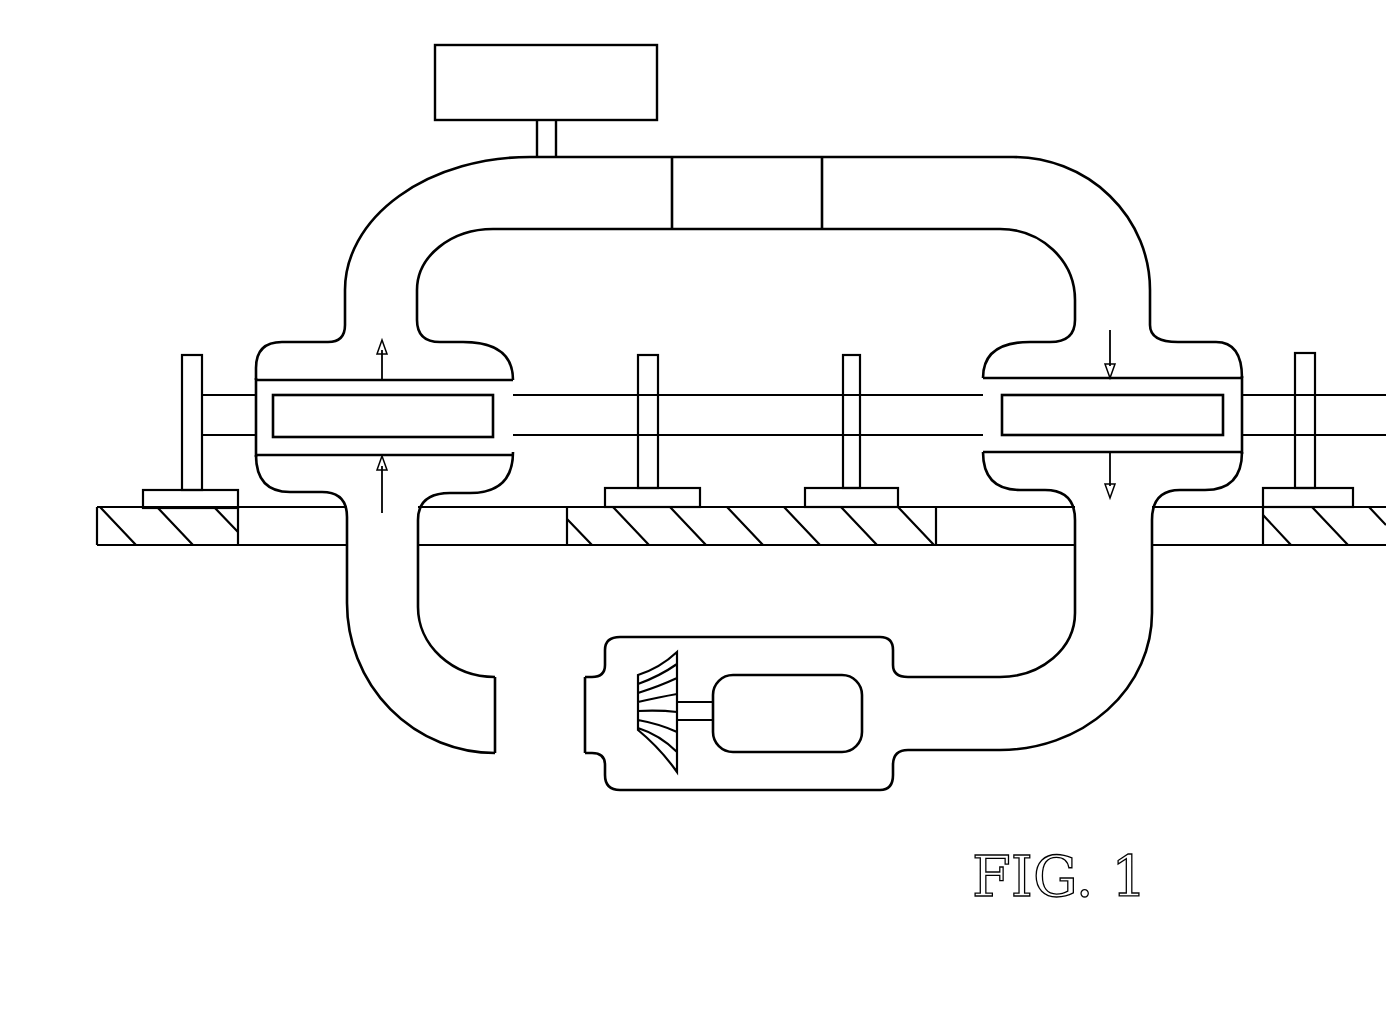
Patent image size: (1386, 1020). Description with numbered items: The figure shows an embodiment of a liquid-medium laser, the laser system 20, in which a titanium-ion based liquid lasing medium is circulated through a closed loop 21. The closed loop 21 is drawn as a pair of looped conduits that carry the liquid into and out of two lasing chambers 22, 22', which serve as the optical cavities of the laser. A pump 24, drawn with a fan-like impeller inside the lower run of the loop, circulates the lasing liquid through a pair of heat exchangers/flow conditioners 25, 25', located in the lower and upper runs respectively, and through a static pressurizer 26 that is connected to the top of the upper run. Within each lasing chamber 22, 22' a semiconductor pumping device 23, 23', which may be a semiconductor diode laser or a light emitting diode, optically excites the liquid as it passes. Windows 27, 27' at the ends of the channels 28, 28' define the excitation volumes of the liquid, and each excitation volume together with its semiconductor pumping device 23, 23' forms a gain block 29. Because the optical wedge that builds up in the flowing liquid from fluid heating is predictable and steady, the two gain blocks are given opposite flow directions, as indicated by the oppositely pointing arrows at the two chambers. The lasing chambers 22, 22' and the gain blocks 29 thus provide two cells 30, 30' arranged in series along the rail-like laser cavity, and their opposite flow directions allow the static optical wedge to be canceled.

The laser system 20 is at (1150, 146).
The closed loop 21 is at (372, 221).
The lasing chamber 22 is at (378, 529).
The lasing chamber 22' is at (1105, 528).
The semiconductor pumping device 23 is at (460, 354).
The semiconductor pumping device 23' is at (1175, 390).
The pump 24 is at (808, 724).
The heat exchanger/flow conditioner 25 is at (540, 715).
The heat exchanger/flow conditioner 25' is at (747, 193).
The static pressurizer 26 is at (658, 100).
The window 27 is at (237, 438).
The window 27' is at (1243, 456).
The channel 28 is at (477, 478).
The channel 28' is at (1046, 342).
The gain block 29 is at (505, 412).
The cell 30 is at (342, 328).
The cell 30' is at (1159, 334).